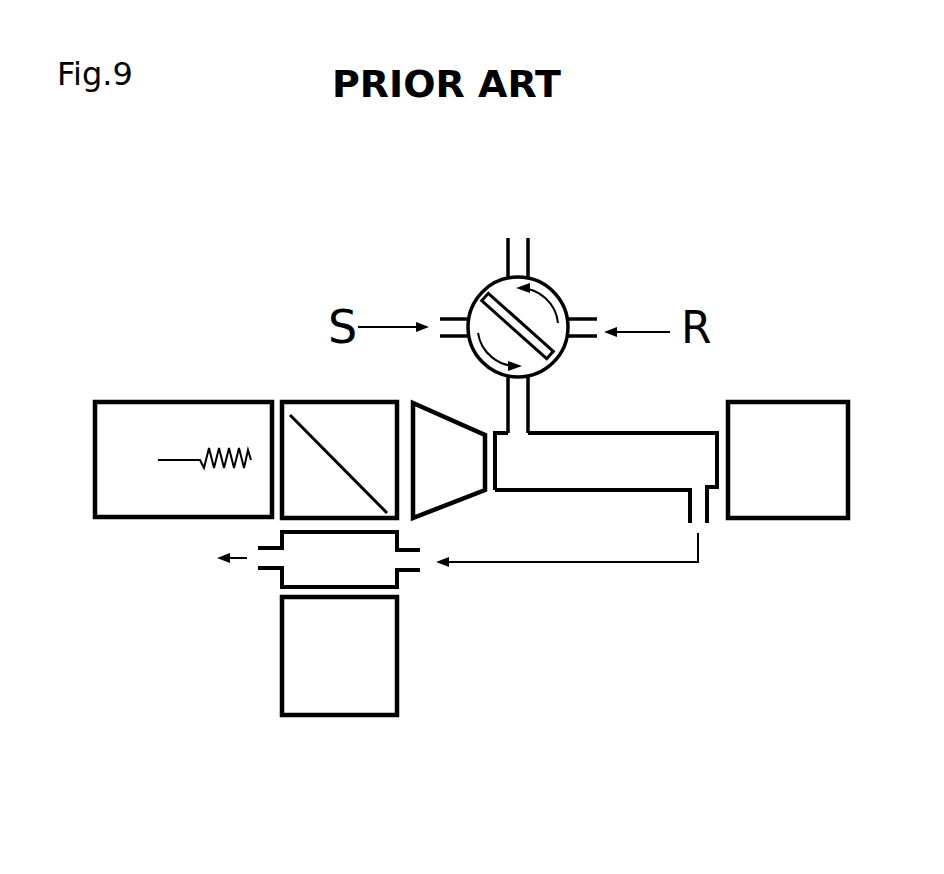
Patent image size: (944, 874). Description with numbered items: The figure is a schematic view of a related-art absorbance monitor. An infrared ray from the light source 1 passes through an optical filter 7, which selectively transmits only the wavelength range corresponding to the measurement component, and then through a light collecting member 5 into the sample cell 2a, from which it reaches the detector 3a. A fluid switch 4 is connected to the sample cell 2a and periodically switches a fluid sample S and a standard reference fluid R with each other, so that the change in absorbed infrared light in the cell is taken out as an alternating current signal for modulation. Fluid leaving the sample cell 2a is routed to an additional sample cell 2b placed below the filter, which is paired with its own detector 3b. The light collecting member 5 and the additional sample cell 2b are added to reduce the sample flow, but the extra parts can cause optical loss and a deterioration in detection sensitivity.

The light source 1 is at (168, 517).
The optical filter 7 is at (335, 460).
The light collecting member 5 is at (460, 502).
The fluid switch 4 is at (558, 292).
The sample cell 2a is at (637, 432).
The detector 3a is at (788, 400).
The sample cell 2b is at (280, 578).
The detector 3b is at (282, 668).